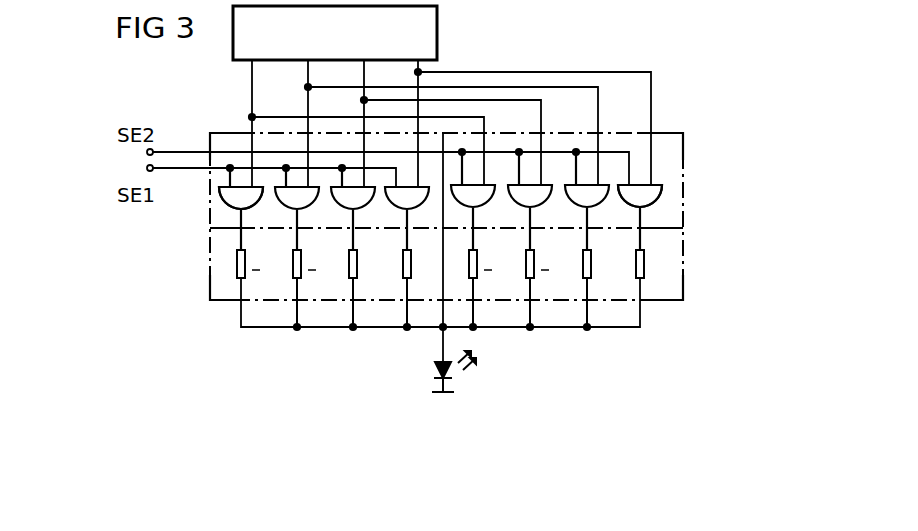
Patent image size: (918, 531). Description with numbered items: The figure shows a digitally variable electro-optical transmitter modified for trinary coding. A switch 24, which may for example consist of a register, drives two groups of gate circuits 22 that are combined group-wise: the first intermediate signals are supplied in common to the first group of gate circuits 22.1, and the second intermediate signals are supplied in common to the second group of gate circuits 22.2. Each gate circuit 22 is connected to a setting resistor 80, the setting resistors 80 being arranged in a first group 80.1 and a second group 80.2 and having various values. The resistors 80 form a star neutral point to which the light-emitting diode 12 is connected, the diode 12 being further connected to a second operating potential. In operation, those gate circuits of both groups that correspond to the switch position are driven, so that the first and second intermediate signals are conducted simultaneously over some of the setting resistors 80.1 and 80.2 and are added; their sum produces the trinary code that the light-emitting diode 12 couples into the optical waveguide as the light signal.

The switch 24 is at (335, 33).
The first group of gate circuits 22.1 is at (230, 140).
The second group of gate circuits 22.2 is at (728, 70).
The gate circuit 22 is at (238, 200).
The first group of setting resistors 80.1 is at (221, 290).
The second group of setting resistors 80.2 is at (714, 357).
The setting resistor 80 is at (295, 283).
The light-emitting diode 12 is at (440, 371).